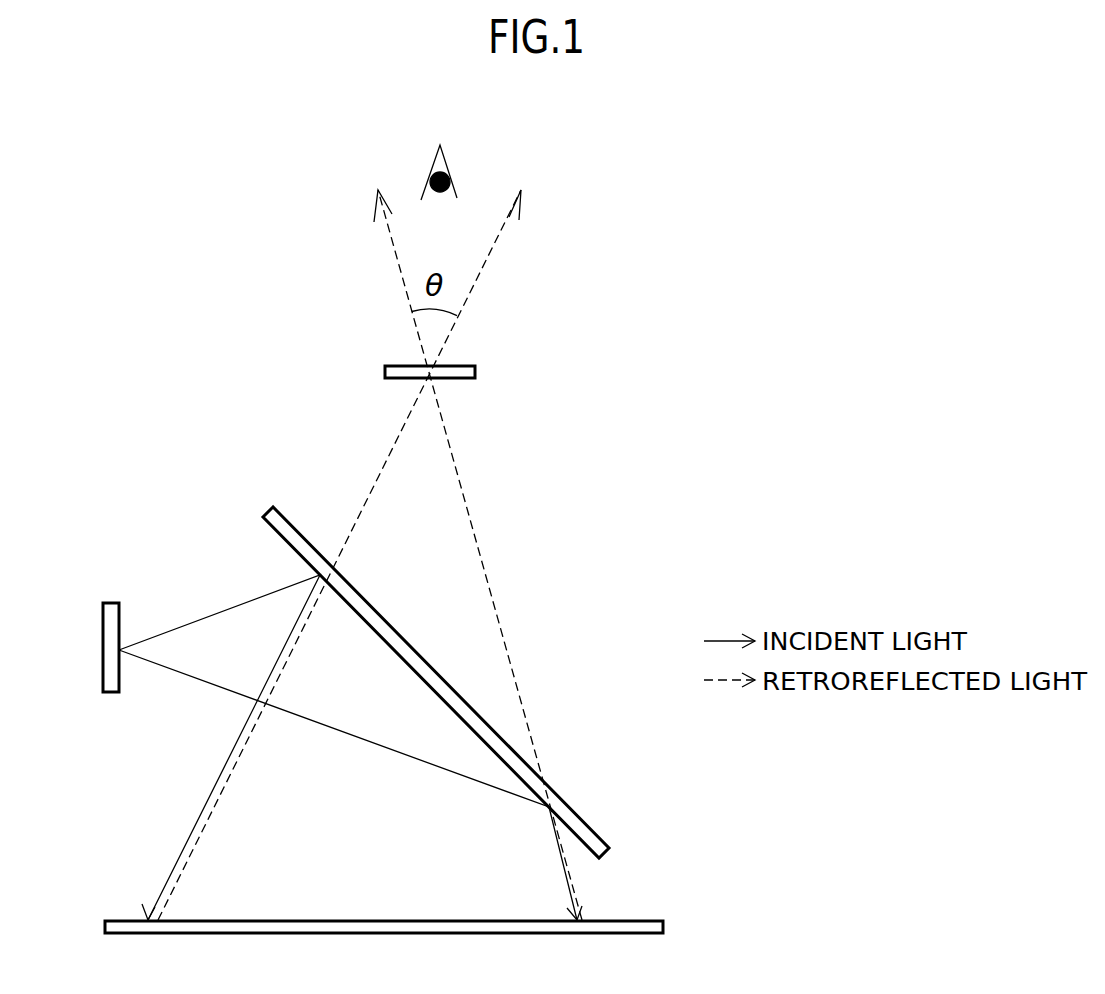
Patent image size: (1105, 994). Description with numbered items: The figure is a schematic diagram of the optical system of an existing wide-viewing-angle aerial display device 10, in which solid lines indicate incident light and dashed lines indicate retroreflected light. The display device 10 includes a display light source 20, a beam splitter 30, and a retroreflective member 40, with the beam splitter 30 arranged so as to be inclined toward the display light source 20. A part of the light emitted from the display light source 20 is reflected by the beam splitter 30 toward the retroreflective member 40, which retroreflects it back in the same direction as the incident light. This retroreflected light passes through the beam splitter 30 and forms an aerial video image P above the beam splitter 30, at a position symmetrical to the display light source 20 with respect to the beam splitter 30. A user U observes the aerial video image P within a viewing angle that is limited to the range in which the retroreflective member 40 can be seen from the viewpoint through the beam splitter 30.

The display device 10 is at (189, 378).
The display light source 20 is at (103, 630).
The beam splitter 30 is at (265, 520).
The retroreflective member 40 is at (655, 921).
The aerial video image P is at (477, 372).
The user U is at (446, 158).